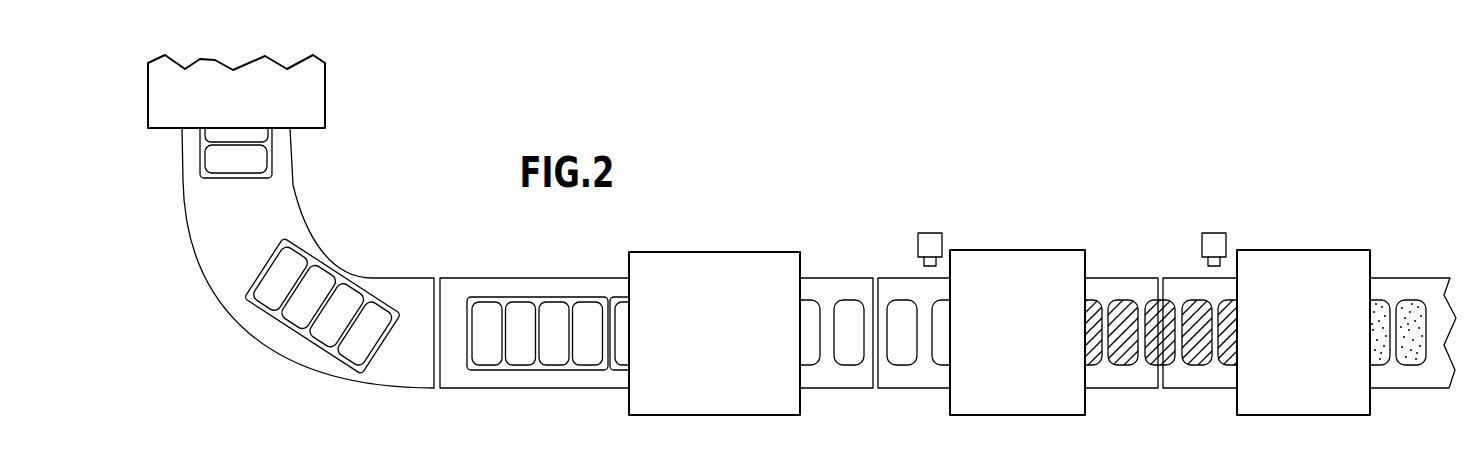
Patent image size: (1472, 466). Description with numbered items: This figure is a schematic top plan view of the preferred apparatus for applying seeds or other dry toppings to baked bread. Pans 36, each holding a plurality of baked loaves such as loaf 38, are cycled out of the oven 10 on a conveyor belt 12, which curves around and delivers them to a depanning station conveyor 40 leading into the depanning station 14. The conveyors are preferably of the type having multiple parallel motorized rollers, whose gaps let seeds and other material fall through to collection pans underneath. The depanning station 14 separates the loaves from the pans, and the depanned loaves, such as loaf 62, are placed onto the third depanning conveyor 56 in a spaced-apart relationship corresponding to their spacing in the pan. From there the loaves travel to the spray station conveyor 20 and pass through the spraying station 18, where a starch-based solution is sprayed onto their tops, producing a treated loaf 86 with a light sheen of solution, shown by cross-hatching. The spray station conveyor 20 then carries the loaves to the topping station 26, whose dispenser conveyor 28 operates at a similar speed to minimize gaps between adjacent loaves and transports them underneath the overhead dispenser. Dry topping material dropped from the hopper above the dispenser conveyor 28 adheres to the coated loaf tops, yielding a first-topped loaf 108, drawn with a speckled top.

The oven 10 is at (325, 93).
The conveyor belt 12 is at (307, 370).
The depanning station 14 is at (738, 252).
The spraying station 18 is at (1028, 250).
The spray station conveyor 20 is at (913, 388).
The topping station 26 is at (1330, 250).
The dispenser conveyor 28 is at (1200, 388).
The pans 36 is at (374, 288).
The loaf 38 is at (275, 272).
The depanning station conveyor 40 is at (537, 388).
The third depanning conveyor 56 is at (833, 278).
The depanned loaf 62 is at (847, 366).
The treated loaf 86 is at (1125, 300).
The first-topped loaf 108 is at (1410, 300).